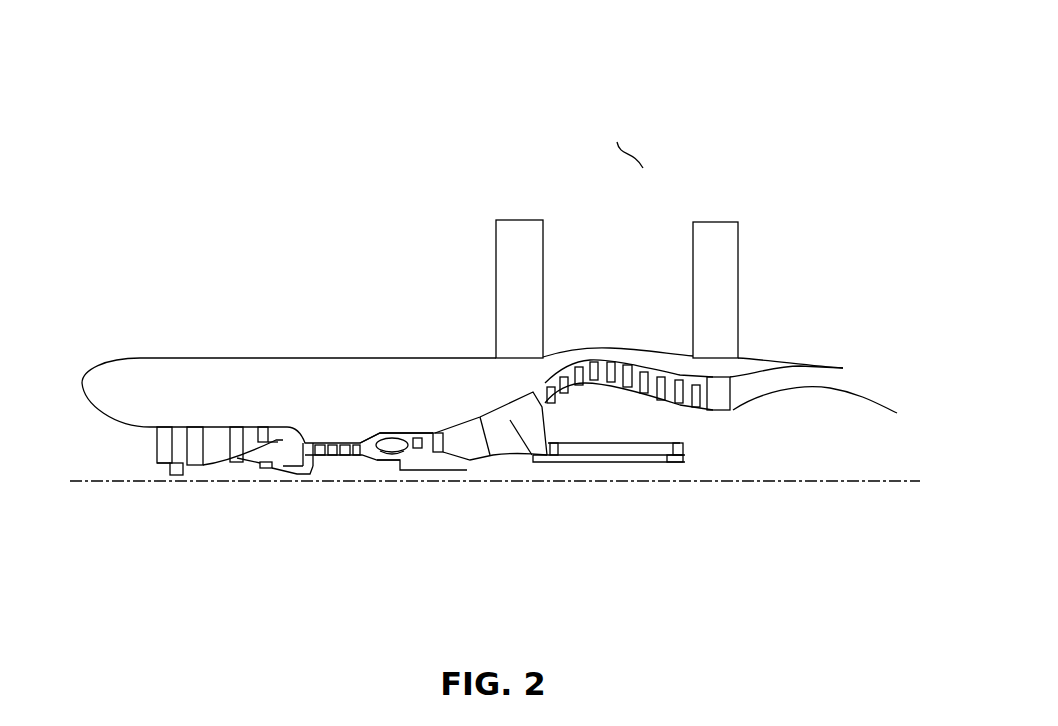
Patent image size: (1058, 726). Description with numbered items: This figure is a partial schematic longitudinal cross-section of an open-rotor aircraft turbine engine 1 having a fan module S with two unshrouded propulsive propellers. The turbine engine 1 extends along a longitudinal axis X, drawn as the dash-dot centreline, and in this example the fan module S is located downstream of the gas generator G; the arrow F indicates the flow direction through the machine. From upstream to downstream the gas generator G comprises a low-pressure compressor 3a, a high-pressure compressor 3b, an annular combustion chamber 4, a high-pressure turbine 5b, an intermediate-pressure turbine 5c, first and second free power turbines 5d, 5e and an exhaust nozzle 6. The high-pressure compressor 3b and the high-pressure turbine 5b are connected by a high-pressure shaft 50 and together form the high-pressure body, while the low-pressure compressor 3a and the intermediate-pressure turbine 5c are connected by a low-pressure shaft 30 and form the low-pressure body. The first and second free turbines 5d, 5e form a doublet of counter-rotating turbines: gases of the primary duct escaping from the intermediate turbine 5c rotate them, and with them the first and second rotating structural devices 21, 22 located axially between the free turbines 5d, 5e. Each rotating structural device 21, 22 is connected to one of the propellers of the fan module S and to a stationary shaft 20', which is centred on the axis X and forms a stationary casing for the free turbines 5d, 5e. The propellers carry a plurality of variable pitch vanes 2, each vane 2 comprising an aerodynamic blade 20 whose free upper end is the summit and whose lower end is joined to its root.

The turbine engine 1 is at (137, 341).
The variable pitch vanes 2 is at (688, 227).
The blade 20 is at (645, 289).
The stationary shaft 20' is at (609, 496).
The first rotating structural device 21 is at (510, 420).
The second rotating structural device 22 is at (733, 402).
The low-pressure compressor 3a is at (163, 460).
The high-pressure compressor 3b is at (332, 455).
The low-pressure shaft 30 is at (342, 470).
The annular combustion chamber 4 is at (393, 446).
The high-pressure shaft 50 is at (382, 463).
The high-pressure turbine 5b is at (417, 449).
The intermediate-pressure turbine 5c is at (438, 453).
The first free power turbine 5d is at (583, 380).
The second free power turbine 5e is at (683, 405).
The exhaust nozzle 6 is at (876, 438).
The fan module S is at (639, 146).
The flow direction F is at (252, 318).
The longitudinal axis X is at (102, 482).
The gas generator G is at (316, 556).